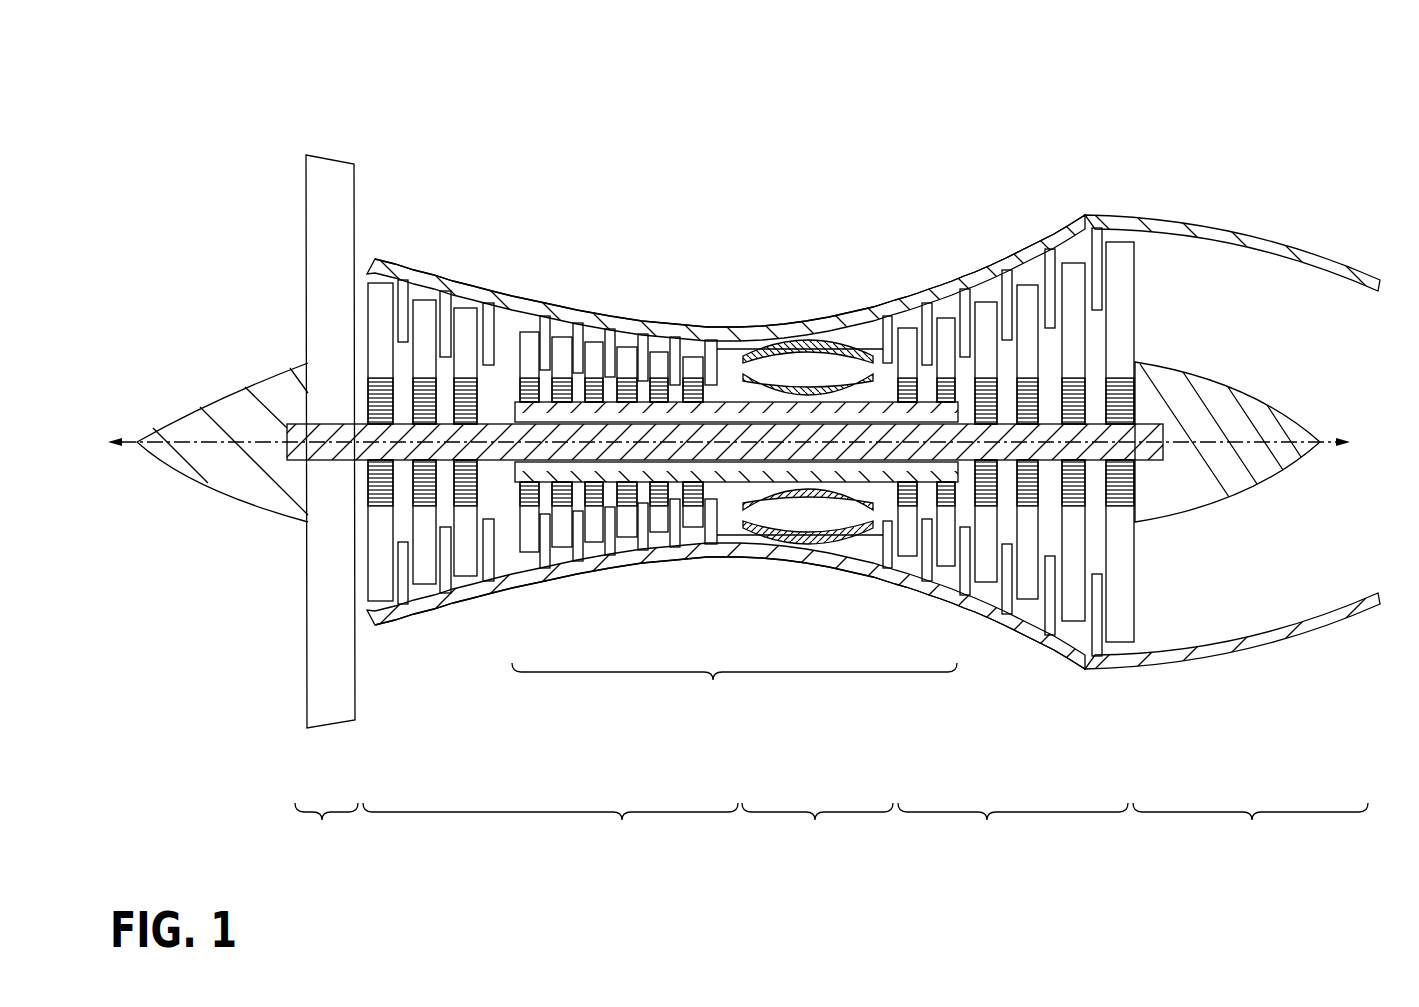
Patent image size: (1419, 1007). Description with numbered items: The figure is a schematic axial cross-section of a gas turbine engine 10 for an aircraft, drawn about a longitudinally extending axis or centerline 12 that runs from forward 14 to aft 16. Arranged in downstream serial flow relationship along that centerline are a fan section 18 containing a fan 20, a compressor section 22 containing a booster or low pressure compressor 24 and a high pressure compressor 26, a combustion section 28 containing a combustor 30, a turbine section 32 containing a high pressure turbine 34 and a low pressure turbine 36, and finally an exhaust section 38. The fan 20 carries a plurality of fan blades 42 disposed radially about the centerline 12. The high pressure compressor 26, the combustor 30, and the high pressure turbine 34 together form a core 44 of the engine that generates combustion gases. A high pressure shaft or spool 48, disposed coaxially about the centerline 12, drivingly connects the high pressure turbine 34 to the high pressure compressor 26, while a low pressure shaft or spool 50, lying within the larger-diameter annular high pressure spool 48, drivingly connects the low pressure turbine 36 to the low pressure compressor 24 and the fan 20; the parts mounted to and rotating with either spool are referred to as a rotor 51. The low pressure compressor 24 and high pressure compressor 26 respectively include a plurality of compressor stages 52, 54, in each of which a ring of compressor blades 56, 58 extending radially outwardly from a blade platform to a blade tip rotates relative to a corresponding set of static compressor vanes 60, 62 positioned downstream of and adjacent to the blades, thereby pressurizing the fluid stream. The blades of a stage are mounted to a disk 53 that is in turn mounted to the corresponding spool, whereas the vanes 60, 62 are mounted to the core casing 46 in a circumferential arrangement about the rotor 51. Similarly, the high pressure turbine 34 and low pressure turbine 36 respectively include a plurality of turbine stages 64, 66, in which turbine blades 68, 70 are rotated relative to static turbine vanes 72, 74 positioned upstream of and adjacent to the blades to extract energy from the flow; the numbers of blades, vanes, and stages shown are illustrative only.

The gas turbine engine 10 is at (165, 52).
The centerline 12 is at (203, 442).
The forward 14 is at (98, 443).
The aft 16 is at (1264, 442).
The fan section 18 is at (285, 503).
The fan 20 is at (299, 221).
The compressor section 22 is at (725, 507).
The low pressure compressor 24 is at (502, 599).
The high pressure compressor 26 is at (670, 565).
The combustion section 28 is at (817, 537).
The combustor 30 is at (866, 336).
The turbine section 32 is at (1002, 481).
The high pressure turbine 34 is at (882, 592).
The low pressure turbine 36 is at (1018, 644).
The exhaust section 38 is at (1203, 504).
The fan blades 42 is at (318, 668).
The core 44 is at (735, 471).
The core casing 46 is at (787, 323).
The HP spool 48 is at (738, 402).
The LP spool 50 is at (500, 420).
The rotor 51 is at (651, 408).
The compressor stages 52 is at (368, 250).
The disk 53 is at (1027, 393).
The compressor stages 54 is at (528, 296).
The compressor blades 56 is at (380, 287).
The compressor blades 58 is at (532, 337).
The static compressor vanes 60 is at (403, 332).
The static compressor vanes 62 is at (547, 345).
The turbine stages 64 is at (912, 282).
The turbine stages 66 is at (1048, 227).
The turbine blades 68 is at (947, 333).
The turbine blades 70 is at (1070, 287).
The static turbine vanes 72 is at (930, 327).
The static turbine vanes 74 is at (1055, 290).